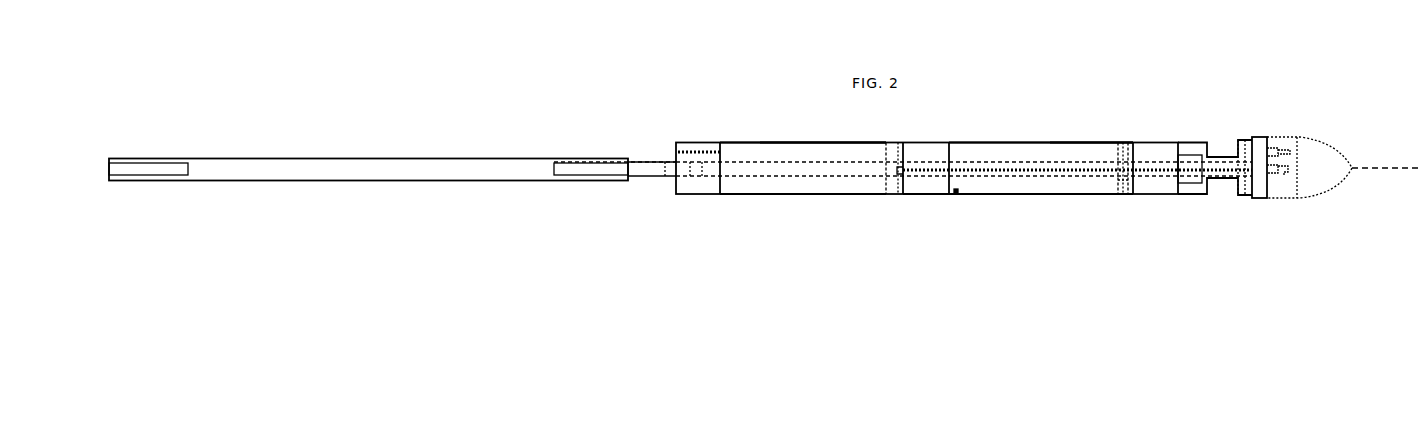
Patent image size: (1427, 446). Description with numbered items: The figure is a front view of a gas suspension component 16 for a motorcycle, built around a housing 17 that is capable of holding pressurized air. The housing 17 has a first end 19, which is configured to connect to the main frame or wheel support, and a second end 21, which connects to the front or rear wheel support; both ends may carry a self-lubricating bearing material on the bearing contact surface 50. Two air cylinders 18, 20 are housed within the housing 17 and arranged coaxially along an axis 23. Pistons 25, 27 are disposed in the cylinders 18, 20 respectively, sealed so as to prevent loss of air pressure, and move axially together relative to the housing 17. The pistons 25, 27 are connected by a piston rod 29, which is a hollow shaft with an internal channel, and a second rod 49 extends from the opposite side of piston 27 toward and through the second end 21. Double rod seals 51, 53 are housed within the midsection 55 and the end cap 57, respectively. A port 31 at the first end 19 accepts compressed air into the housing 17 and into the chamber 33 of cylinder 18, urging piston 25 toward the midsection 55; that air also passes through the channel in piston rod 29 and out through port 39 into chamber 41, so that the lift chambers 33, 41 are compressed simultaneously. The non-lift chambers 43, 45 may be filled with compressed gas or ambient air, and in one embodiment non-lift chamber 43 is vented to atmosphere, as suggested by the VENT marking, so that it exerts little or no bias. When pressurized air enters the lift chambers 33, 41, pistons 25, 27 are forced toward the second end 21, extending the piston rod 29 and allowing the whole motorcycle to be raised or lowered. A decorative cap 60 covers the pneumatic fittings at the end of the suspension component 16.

The suspension component 16 is at (685, 127).
The housing 17 is at (802, 194).
The cylinder 18 is at (1086, 143).
The first end 19 is at (1194, 130).
The cylinder 20 is at (766, 143).
The second end 21 is at (670, 137).
The axis 23 is at (1390, 168).
The piston 25 is at (1122, 194).
The piston 27 is at (889, 194).
The piston rod 29 is at (1020, 180).
The port 31 is at (1242, 178).
The chamber 33 is at (1133, 143).
The port 39 is at (902, 150).
The chamber 41 is at (900, 194).
The non-lift chamber 43 is at (1013, 150).
The non-lift chamber 45 is at (804, 147).
The second rod 49 is at (768, 175).
The bearing contact surface 50 is at (1063, 188).
The double rod seal 51 is at (936, 158).
The double rod seal 53 is at (692, 180).
The midsection 55 is at (935, 196).
The end cap 57 is at (692, 194).
The decorative cap 60 is at (1320, 141).
The vent opening VENT is at (956, 194).